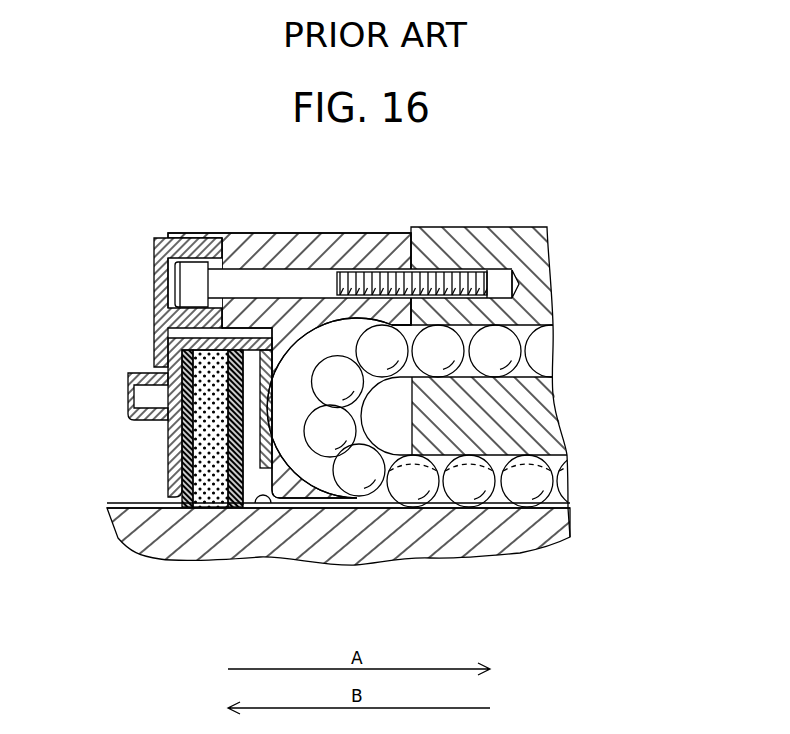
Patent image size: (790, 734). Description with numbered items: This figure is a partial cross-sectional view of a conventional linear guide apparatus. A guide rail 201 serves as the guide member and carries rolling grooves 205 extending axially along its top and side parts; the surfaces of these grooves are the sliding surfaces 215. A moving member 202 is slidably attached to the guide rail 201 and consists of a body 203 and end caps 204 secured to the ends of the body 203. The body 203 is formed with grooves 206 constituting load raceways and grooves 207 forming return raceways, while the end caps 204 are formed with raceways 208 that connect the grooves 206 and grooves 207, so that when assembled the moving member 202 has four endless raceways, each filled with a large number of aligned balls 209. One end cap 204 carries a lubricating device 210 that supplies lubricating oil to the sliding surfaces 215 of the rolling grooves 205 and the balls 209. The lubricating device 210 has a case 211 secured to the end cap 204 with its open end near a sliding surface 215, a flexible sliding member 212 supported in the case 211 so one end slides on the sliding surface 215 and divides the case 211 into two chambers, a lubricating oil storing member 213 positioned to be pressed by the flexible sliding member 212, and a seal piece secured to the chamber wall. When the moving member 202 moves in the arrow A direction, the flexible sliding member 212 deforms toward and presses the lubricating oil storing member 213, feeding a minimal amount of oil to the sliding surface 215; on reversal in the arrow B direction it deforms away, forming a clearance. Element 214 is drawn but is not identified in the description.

The guide rail 201 is at (450, 548).
The moving member 202 is at (438, 227).
The body 203 is at (508, 228).
The end cap 204 is at (322, 232).
The rolling groove 205 is at (130, 503).
The groove constituting load raceway 206 is at (568, 447).
The groove forming return raceway 207 is at (523, 327).
The raceway 208 is at (316, 458).
The ball 209 is at (528, 487).
The lubricating device 210 is at (128, 372).
The case 211 is at (168, 437).
The flexible sliding member 212 is at (235, 507).
The lubricating oil storing member 213 is at (210, 505).
The electrode plates 214 is at (177, 455).
The sliding surface 215 is at (255, 505).